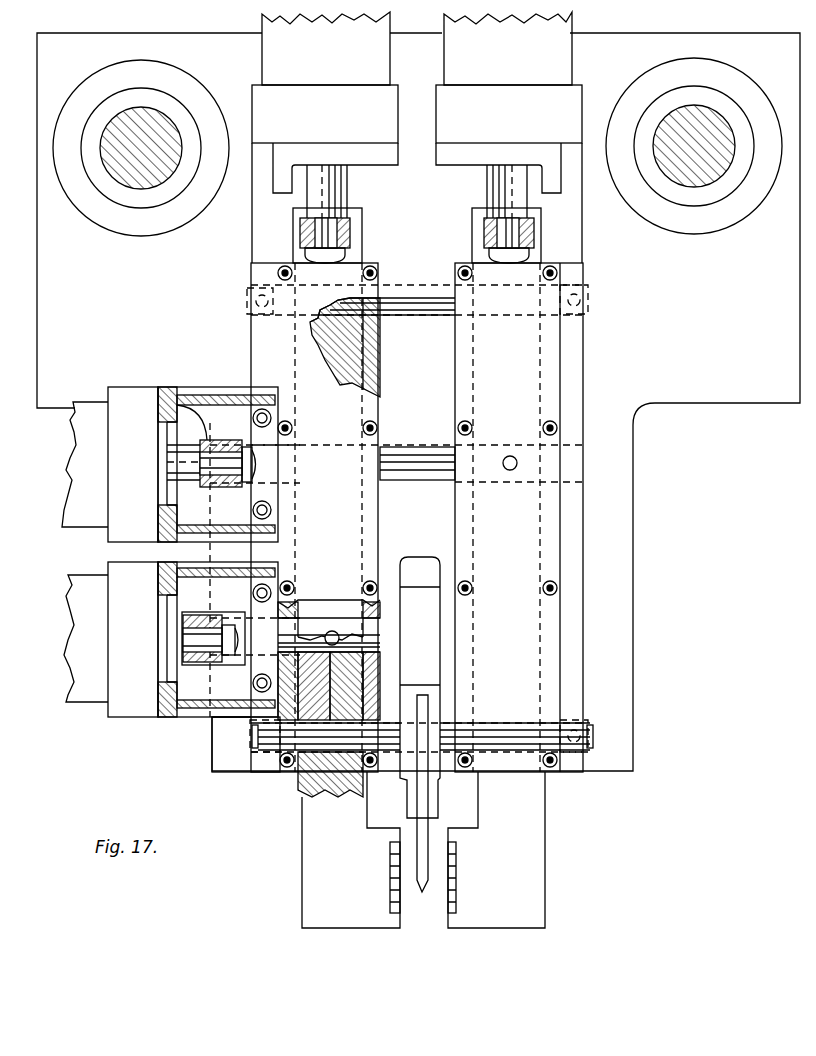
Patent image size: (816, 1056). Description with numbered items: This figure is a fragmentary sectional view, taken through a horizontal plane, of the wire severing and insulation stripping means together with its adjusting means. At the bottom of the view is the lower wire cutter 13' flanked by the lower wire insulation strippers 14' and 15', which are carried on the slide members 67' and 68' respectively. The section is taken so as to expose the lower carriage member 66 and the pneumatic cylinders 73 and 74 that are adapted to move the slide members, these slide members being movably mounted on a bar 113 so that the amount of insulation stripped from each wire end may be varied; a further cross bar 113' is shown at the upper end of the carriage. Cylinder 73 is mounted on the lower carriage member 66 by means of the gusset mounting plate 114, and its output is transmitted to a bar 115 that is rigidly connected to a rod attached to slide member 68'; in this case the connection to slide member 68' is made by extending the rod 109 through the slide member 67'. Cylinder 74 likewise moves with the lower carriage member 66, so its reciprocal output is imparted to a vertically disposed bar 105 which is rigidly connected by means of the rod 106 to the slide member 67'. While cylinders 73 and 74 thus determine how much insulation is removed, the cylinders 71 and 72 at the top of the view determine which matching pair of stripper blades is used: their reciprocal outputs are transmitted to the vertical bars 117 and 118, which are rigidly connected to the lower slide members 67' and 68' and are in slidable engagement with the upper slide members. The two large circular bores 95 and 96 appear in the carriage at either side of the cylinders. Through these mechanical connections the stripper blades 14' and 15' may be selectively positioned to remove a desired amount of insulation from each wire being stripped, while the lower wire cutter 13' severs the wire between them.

The lower wire cutter 13' is at (422, 733).
The wire insulation stripper 14' is at (393, 909).
The wire insulation stripper 15' is at (452, 909).
The lower carriage member 66 is at (583, 685).
The slide member 67' is at (351, 850).
The slide member 68' is at (496, 850).
The pneumatic cylinder 71 is at (352, 72).
The pneumatic cylinder 72 is at (507, 72).
The pneumatic cylinder 73 is at (110, 464).
The pneumatic cylinder 74 is at (111, 639).
The left guide bore 95 is at (140, 183).
The right guide bore 96 is at (690, 175).
The vertically disposed bar 105 is at (215, 618).
The rod 106 is at (368, 632).
The rod 109 is at (402, 452).
The bar 113 is at (422, 719).
The upper cross shaft 113' is at (382, 280).
The gusset mounting plate 114 is at (197, 395).
The bar 115 is at (218, 440).
The vertical bar 117 is at (350, 224).
The vertical bar 118 is at (482, 224).